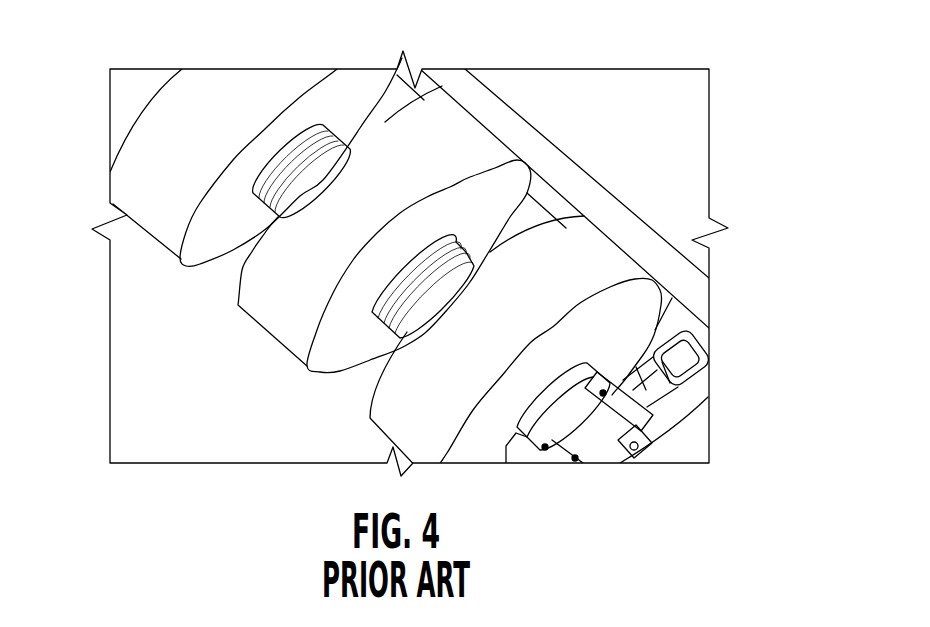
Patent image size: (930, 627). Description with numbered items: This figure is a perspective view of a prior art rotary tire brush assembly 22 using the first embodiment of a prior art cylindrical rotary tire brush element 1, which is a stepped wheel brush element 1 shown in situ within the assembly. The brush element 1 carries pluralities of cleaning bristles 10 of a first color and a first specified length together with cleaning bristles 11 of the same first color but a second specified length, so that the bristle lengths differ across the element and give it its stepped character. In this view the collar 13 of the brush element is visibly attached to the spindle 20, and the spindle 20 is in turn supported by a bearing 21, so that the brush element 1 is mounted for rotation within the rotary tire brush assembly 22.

The cylindrical rotary tire brush element 1 is at (82, 130).
The cleaning bristles 10 is at (272, 262).
The cleaning bristles 11 is at (308, 366).
The collar 13 is at (538, 440).
The spindle 20 is at (634, 458).
The bearing 21 is at (660, 420).
The rotary tire brush assembly 22 is at (622, 180).